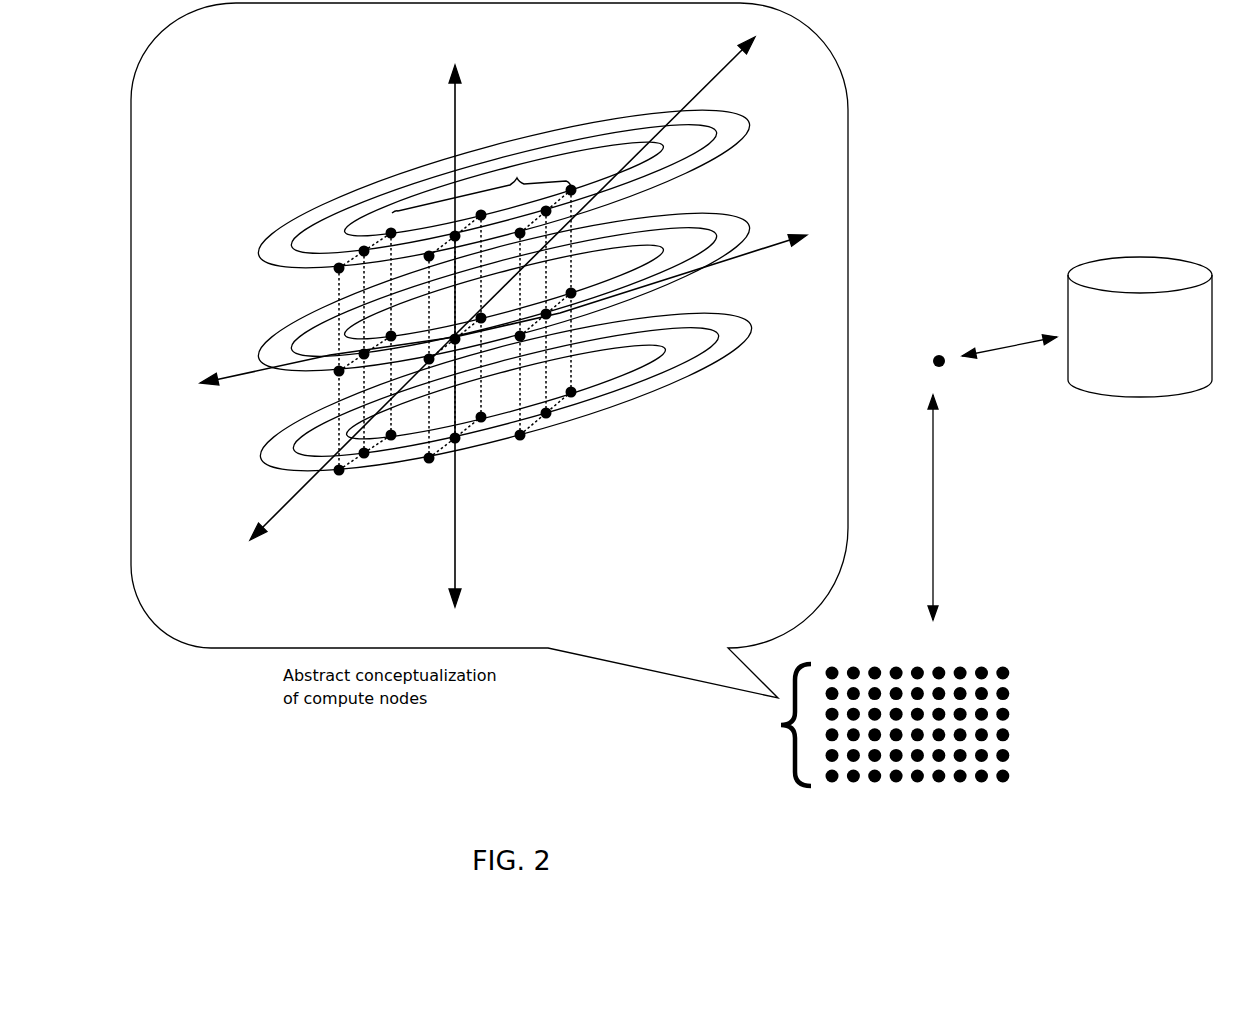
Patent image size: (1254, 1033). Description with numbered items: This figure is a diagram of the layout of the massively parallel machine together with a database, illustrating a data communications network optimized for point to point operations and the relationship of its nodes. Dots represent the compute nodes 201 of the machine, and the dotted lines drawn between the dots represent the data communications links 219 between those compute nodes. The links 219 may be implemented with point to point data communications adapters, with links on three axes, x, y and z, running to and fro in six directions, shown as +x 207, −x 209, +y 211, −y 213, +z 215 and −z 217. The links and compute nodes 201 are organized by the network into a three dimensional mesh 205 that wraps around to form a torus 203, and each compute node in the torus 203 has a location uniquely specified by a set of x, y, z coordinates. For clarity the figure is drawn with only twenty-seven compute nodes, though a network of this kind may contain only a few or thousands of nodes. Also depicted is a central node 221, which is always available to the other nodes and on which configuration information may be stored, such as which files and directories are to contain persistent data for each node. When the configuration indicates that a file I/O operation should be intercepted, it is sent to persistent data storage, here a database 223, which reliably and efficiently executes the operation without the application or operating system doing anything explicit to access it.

The compute nodes 201 is at (571, 392).
The torus 203 is at (326, 193).
The three dimensional mesh 205 is at (404, 303).
The +x direction 207 is at (648, 281).
The −x direction 209 is at (298, 384).
The +y direction 211 is at (625, 178).
The −y direction 213 is at (340, 449).
The +z direction 215 is at (454, 179).
The −z direction 217 is at (479, 485).
The data communications links 219 is at (338, 398).
The central node 221 is at (934, 359).
The database 223 is at (1141, 374).